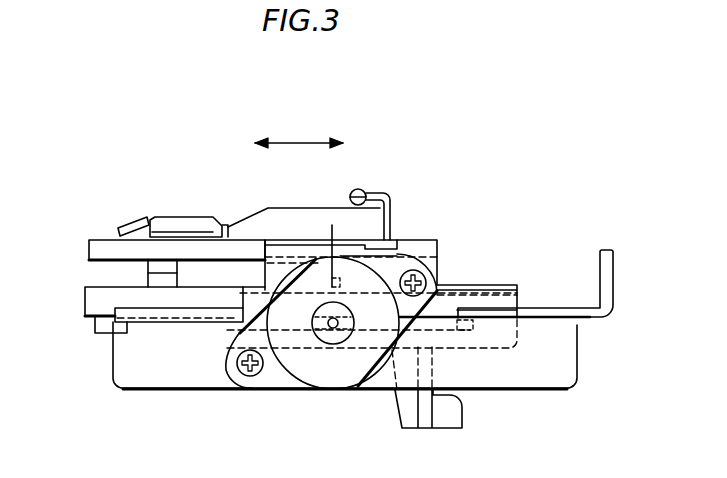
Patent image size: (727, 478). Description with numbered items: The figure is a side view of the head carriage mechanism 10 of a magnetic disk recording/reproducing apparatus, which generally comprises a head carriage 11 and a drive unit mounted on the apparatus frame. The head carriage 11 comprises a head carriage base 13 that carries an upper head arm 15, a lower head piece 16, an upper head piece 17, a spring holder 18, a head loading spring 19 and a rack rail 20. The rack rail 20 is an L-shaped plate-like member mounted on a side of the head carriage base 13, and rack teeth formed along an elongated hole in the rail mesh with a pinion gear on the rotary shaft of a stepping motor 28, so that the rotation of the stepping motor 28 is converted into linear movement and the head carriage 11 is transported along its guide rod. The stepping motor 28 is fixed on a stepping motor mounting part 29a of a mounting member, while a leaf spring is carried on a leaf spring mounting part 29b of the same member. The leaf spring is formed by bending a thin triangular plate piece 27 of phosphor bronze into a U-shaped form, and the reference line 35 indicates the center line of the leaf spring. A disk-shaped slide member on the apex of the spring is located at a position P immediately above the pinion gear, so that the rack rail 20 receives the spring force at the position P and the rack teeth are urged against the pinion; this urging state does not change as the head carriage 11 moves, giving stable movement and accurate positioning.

The head carriage mechanism 10 is at (514, 121).
The head carriage 11 is at (165, 208).
The head carriage base 13 is at (98, 302).
The upper head arm 15 is at (124, 214).
The lower head piece 16 is at (152, 282).
The upper head piece 17 is at (152, 268).
The spring holder 18 is at (383, 205).
The head loading spring 19 is at (360, 189).
The rack rail 20 is at (510, 300).
The triangular plate piece 27 is at (282, 396).
The stepping motor 28 is at (342, 382).
The stepping motor mounting part 29a is at (192, 365).
The leaf spring mounting part 29b is at (287, 252).
The center line of the leaf spring 35 is at (332, 240).
The position immediately above the pinion gear P is at (330, 287).